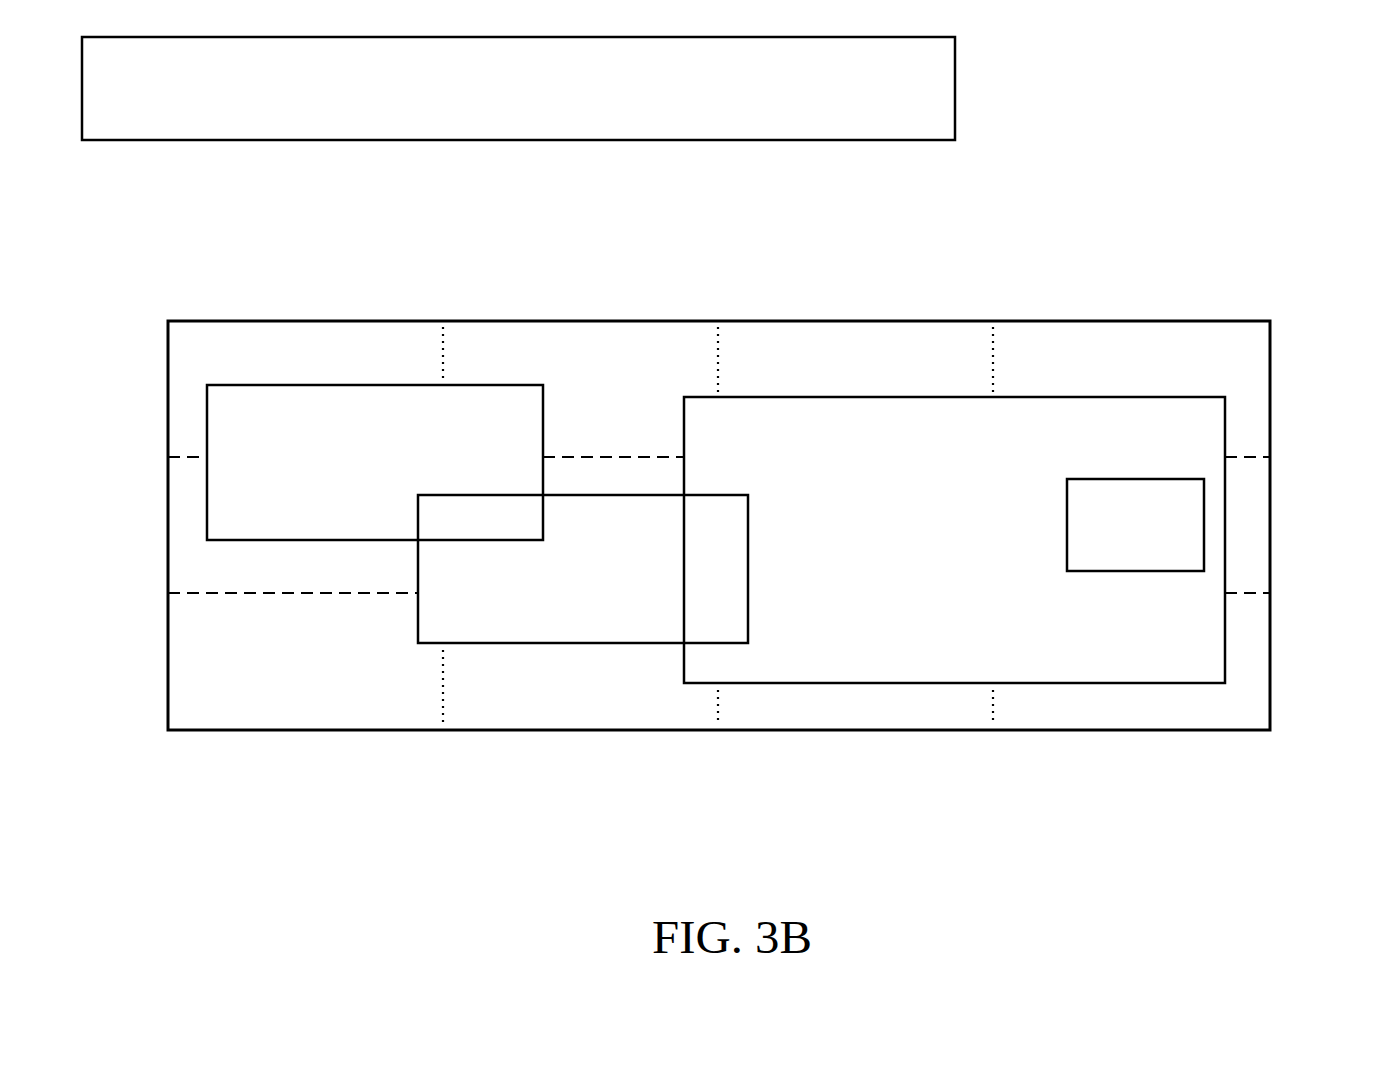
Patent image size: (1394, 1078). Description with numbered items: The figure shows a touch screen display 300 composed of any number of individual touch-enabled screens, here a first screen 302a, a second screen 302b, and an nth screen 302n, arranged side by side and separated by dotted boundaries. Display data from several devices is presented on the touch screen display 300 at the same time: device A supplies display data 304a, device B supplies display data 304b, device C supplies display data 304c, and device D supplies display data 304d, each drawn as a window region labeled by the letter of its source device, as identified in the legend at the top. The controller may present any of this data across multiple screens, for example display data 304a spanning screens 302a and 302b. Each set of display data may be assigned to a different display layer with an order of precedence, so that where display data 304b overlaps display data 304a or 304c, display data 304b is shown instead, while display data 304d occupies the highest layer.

The touch screen display 300 is at (1245, 110).
The screen 302a is at (305, 340).
The screen 302b is at (582, 340).
The screen 302n is at (1132, 710).
The display data 304a is at (320, 294).
The display data 304b is at (422, 366).
The display data 304c is at (881, 365).
The display data 304d is at (870, 330).